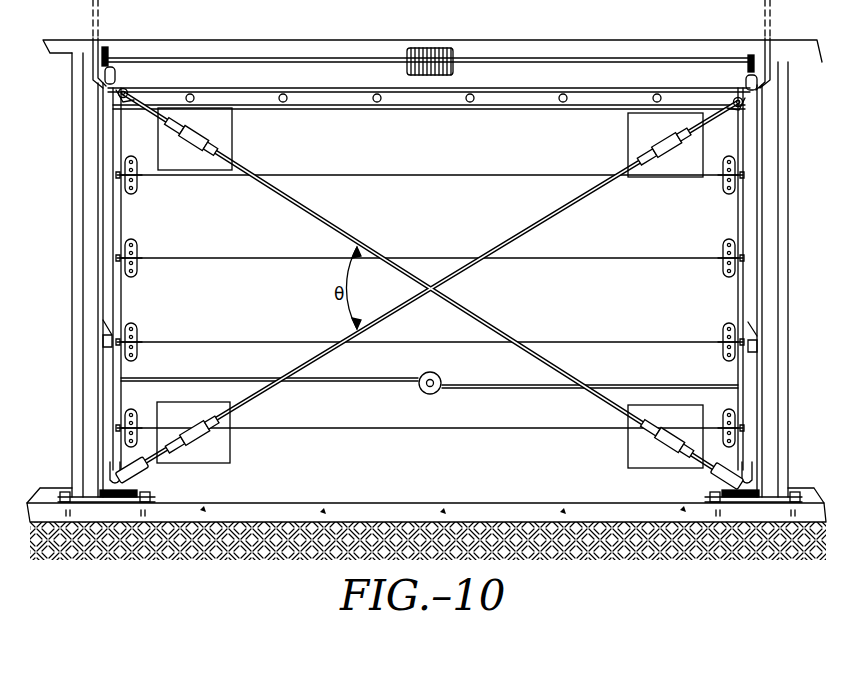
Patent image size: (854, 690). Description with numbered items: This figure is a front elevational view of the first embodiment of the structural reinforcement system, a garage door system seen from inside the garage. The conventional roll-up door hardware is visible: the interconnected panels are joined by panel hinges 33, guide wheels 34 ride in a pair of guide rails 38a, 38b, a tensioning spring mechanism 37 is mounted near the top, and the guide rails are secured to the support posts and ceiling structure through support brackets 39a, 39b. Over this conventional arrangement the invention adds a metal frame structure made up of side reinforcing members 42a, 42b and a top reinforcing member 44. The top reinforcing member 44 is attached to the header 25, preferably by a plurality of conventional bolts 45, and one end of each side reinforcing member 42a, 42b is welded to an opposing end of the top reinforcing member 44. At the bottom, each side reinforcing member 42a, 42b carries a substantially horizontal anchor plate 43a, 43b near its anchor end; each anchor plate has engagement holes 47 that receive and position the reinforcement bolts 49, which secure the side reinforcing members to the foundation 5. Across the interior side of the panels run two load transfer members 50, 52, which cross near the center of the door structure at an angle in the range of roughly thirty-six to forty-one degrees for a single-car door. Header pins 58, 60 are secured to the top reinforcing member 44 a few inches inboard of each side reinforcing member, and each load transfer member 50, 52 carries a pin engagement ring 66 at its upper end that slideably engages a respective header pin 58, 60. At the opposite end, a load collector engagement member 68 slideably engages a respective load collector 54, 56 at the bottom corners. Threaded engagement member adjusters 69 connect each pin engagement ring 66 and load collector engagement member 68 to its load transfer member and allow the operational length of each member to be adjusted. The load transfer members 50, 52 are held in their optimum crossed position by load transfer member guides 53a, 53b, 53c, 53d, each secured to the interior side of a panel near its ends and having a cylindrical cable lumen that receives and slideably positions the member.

The foundation 5 is at (40, 510).
The header 25 is at (609, 50).
The panel hinges 33 is at (130, 240).
The guide wheels 34 is at (757, 350).
The tensioning spring mechanism 37 is at (447, 50).
The guide rail 38a is at (100, 193).
The guide rail 38b is at (760, 205).
The support bracket 39a is at (97, 57).
The support bracket 39b is at (775, 70).
The side reinforcing member 42a is at (85, 262).
The side reinforcing member 42b is at (773, 268).
The anchor plate 43a is at (55, 493).
The anchor plate 43b is at (812, 495).
The top reinforcing member 44 is at (248, 91).
The bolts 45 is at (376, 94).
The engagement holes 47 is at (160, 500).
The reinforcement bolts 49 is at (68, 490).
The load transfer member 50 is at (717, 112).
The load transfer member 52 is at (140, 100).
The load transfer member guide 53a is at (232, 138).
The load transfer member guide 53b is at (628, 146).
The load transfer member guide 53c is at (230, 453).
The load transfer member guide 53d is at (628, 452).
The load collector 54 is at (106, 470).
The load collector 56 is at (762, 468).
The header pin 58 is at (114, 95).
The header pin 60 is at (740, 99).
The pin engagement ring 66 is at (128, 94).
The load collector engagement member 68 is at (122, 460).
The threaded engagement member adjusters 69 is at (210, 150).